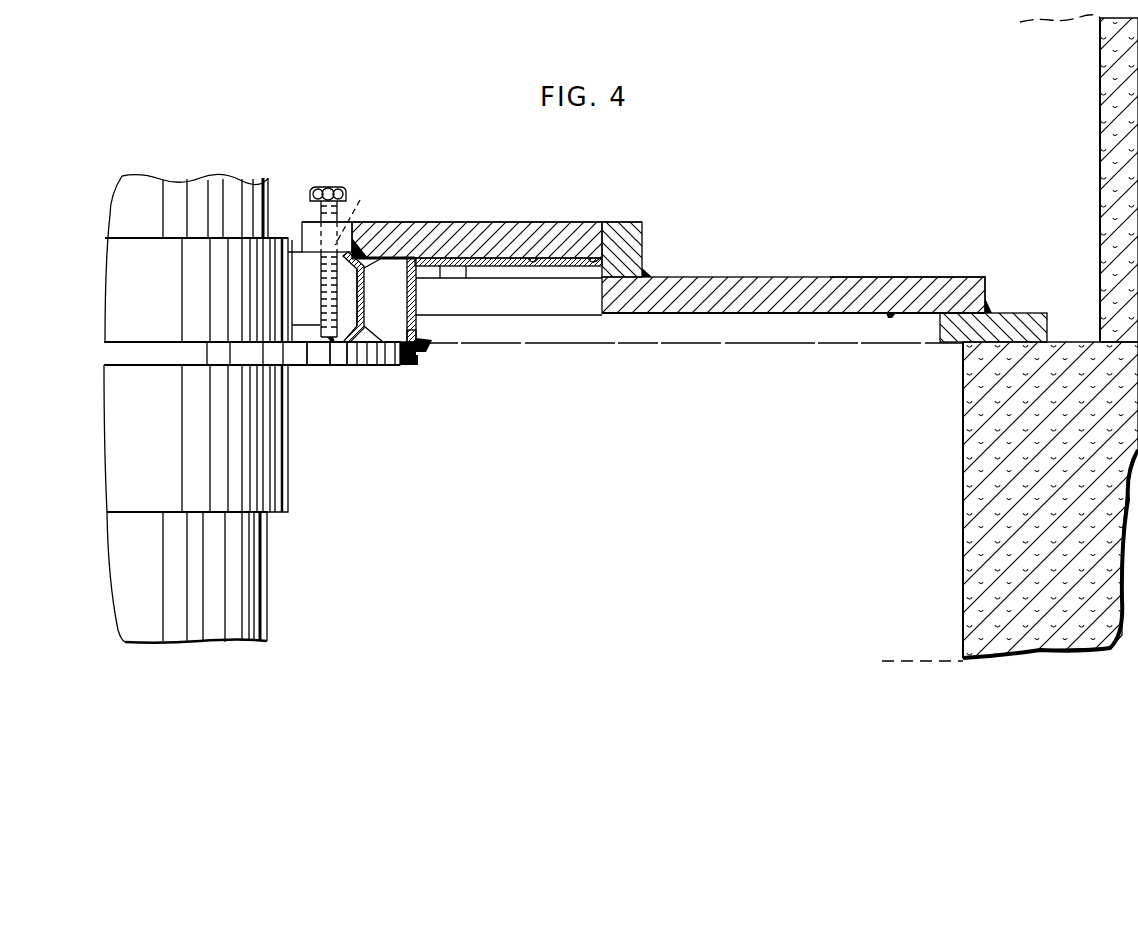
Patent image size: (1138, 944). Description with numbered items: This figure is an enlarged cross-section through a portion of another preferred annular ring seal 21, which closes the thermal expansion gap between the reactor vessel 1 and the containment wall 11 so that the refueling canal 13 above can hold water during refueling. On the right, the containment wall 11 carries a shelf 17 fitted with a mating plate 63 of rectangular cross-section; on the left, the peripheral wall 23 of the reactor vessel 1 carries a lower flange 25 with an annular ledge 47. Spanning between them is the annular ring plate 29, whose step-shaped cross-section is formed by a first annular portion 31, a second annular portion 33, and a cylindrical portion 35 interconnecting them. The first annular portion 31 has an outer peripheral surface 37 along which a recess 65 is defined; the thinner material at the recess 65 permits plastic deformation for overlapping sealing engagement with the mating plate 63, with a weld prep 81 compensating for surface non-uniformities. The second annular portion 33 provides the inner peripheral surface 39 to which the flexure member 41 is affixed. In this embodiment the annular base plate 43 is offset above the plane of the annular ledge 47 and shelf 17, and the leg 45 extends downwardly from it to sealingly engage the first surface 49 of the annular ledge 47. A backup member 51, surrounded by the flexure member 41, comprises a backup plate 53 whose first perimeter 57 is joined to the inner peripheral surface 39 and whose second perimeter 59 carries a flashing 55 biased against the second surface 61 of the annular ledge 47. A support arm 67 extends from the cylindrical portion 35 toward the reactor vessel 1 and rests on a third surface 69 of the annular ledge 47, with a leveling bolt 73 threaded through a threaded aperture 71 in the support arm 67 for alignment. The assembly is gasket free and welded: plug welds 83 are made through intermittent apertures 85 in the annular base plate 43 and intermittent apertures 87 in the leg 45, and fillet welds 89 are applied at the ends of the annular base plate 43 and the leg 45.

The reactor vessel 1 is at (204, 388).
The containment wall 11 is at (1105, 138).
The refueling canal 13 is at (1024, 83).
The shelf 17 is at (1080, 340).
The annular ring seal 21 is at (793, 247).
The peripheral wall 23 is at (245, 584).
The lower flange 25 is at (302, 222).
The annular ring plate 29 is at (770, 274).
The first annular portion 31 is at (835, 287).
The second annular portion 33 is at (472, 220).
The cylindrical portion 35 is at (635, 248).
The outer peripheral surface 37 is at (922, 322).
The inner peripheral surface 39 is at (398, 270).
The flexure member 41 is at (443, 268).
The annular base plate 43 is at (466, 268).
The leg 45 is at (420, 326).
The annular ledge 47 is at (296, 360).
The first surface 49 is at (410, 370).
The backup member 51 is at (362, 308).
The backup plate 53 is at (425, 228).
The flashing 55 is at (369, 366).
The first perimeter 57 is at (360, 248).
The second perimeter 59 is at (343, 366).
The second surface 61 is at (318, 366).
The mating plate 63 is at (1027, 318).
The recess 65 is at (888, 318).
The support arm 67 is at (313, 222).
The third surface 69 is at (250, 342).
The threaded aperture 71 is at (362, 212).
The leveling bolt 73 is at (336, 205).
The weld prep 81 is at (990, 300).
The plug weld 83 is at (513, 262).
The intermittent aperture 85 is at (532, 262).
The intermittent aperture 87 is at (422, 348).
The fillet weld 89 is at (560, 262).